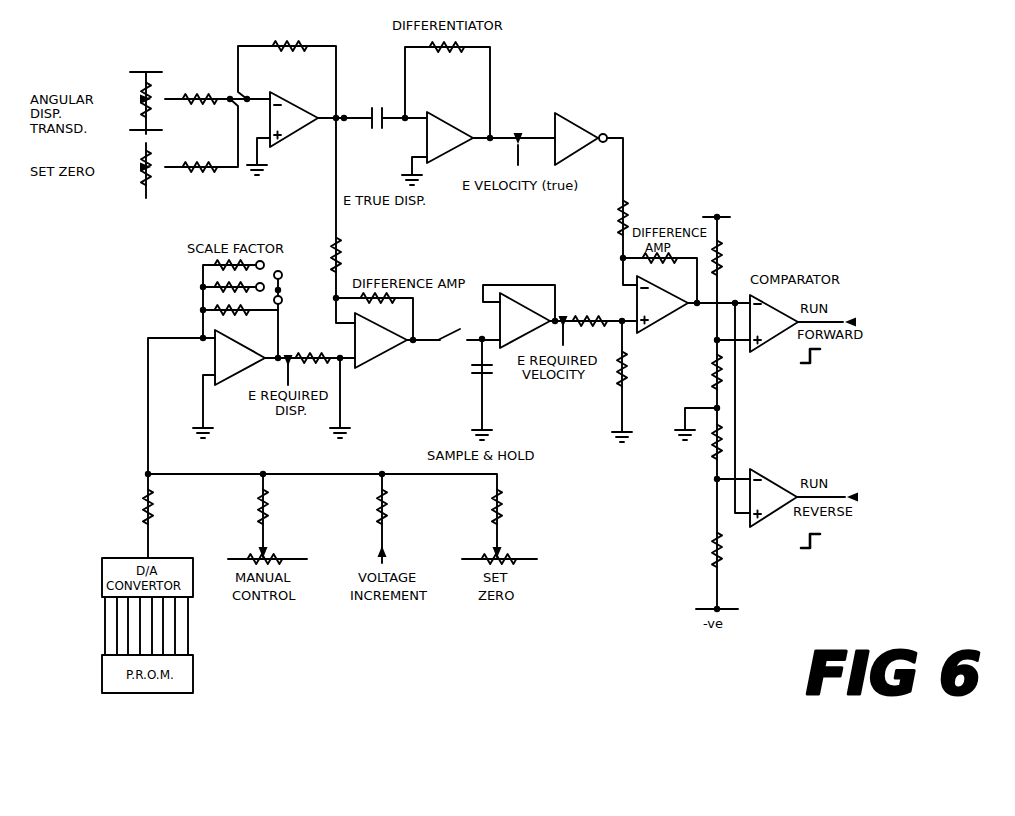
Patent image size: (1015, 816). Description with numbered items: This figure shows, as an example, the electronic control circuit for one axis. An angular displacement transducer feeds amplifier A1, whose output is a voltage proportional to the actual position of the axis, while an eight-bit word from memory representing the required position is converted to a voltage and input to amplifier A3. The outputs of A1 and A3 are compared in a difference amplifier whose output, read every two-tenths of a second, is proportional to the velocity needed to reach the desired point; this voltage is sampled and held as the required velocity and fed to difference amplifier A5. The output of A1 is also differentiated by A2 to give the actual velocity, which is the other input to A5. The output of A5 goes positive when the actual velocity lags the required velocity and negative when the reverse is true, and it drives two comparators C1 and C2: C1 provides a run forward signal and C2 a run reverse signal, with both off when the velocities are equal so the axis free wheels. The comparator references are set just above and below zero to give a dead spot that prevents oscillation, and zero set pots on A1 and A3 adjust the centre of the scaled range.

The amplifier A1 is at (294, 119).
The differentiator amplifier A2 is at (450, 137).
The amplifier A3 is at (240, 357).
The difference amplifier A5 is at (662, 304).
The comparator C1 is at (774, 323).
The comparator C2 is at (773, 498).